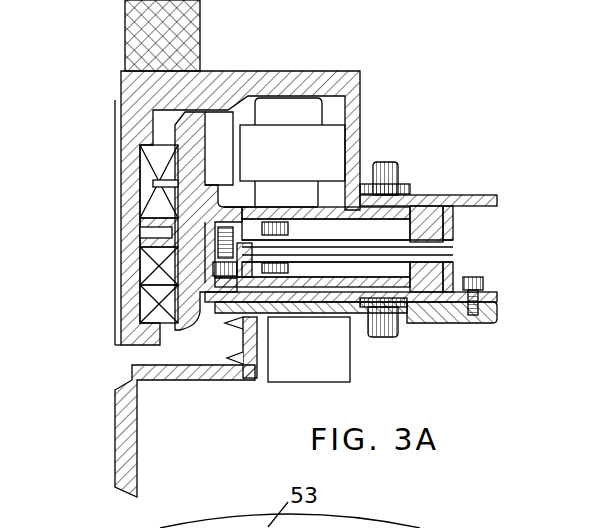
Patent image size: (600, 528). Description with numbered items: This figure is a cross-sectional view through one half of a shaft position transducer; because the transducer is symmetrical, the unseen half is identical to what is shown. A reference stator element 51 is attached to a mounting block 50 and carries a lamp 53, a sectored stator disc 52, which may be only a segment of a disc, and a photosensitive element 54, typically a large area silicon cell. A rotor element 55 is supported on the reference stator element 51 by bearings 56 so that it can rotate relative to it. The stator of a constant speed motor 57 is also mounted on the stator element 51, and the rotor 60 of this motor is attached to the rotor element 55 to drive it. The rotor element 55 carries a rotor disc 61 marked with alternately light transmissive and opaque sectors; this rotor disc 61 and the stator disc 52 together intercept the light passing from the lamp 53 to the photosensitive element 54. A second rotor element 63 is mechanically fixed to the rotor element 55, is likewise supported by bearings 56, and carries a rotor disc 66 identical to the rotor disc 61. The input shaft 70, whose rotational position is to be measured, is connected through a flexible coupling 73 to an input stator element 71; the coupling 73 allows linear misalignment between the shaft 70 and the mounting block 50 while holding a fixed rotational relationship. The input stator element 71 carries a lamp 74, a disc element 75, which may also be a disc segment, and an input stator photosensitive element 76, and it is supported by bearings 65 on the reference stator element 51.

The mounting block 50 is at (200, 25).
The reference stator element 51 is at (345, 80).
The sectored stator disc 52 is at (402, 203).
The lamp 53 is at (387, 165).
The photosensitive element 54 is at (455, 250).
The rotor element 55 is at (185, 133).
The bearings 56 is at (150, 184).
The constant speed motor 57 is at (300, 118).
The rotor of the motor 60 is at (222, 127).
The rotor disc 61 is at (453, 225).
The second rotor element 63 is at (145, 258).
The bearings 65 is at (150, 280).
The rotor disc 66 is at (423, 300).
The input shaft 70 is at (135, 433).
The input stator element 71 is at (300, 314).
The flexible coupling 73 is at (232, 330).
The lamp 74 is at (387, 338).
The disc element 75 is at (398, 292).
The input stator photosensitive element 76 is at (455, 258).